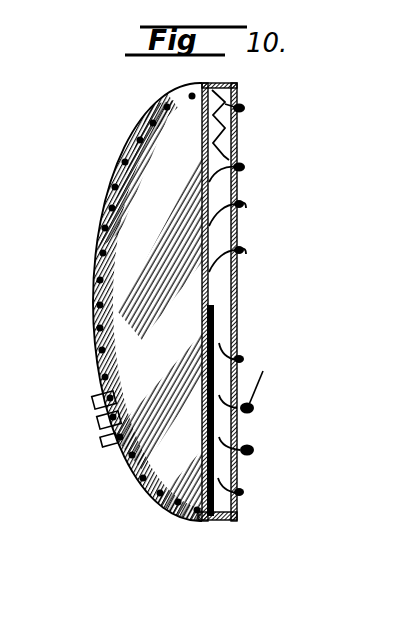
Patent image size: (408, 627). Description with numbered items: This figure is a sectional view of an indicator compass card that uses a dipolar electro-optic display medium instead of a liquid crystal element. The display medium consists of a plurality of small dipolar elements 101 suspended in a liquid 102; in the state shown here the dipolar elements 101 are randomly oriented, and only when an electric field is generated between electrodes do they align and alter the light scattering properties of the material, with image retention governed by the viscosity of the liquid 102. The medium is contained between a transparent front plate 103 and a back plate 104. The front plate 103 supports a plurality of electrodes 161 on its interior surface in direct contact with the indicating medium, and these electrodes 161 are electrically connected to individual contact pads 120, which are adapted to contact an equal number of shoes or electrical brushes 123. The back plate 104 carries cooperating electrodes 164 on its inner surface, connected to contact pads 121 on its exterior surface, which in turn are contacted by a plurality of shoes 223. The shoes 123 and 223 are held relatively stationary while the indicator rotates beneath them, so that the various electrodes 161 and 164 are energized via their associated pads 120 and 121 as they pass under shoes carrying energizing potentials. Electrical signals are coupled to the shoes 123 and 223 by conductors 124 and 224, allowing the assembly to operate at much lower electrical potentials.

The dipolar elements 101 is at (229, 116).
The liquid 102 is at (242, 165).
The front plate 103 is at (137, 143).
The back plate 104 is at (236, 107).
The contact pads 120 is at (100, 277).
The contact pads 121 is at (234, 358).
The contact shoes 123 is at (93, 397).
The conductors 124 is at (98, 420).
The electrodes 161 is at (209, 520).
The electrodes 164 is at (238, 465).
The shoes 223 is at (250, 413).
The conductors 224 is at (250, 408).